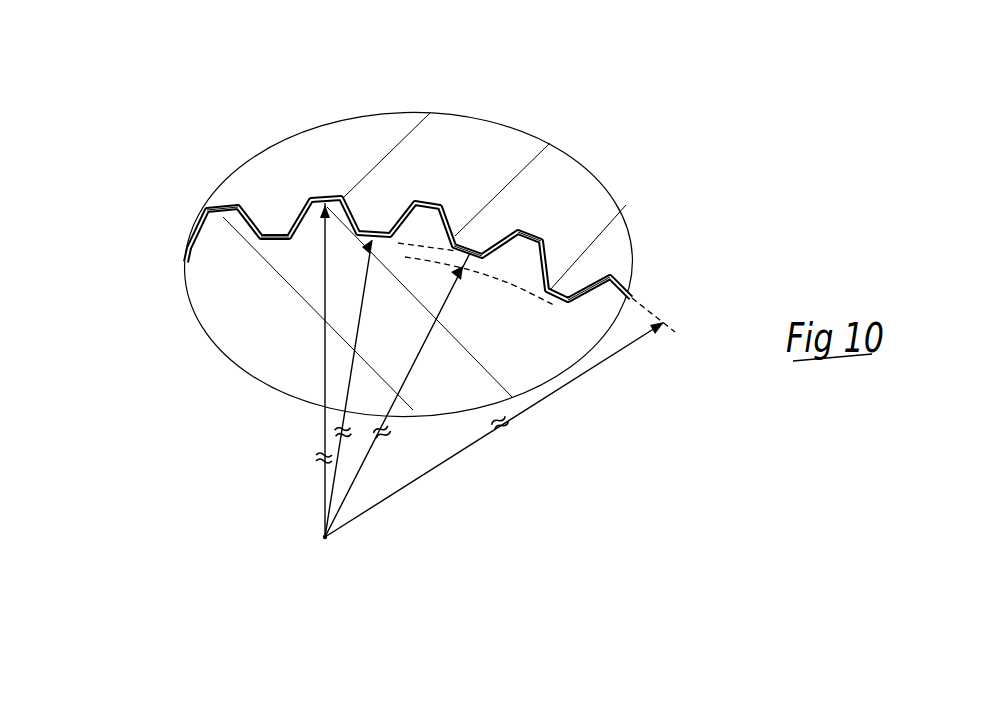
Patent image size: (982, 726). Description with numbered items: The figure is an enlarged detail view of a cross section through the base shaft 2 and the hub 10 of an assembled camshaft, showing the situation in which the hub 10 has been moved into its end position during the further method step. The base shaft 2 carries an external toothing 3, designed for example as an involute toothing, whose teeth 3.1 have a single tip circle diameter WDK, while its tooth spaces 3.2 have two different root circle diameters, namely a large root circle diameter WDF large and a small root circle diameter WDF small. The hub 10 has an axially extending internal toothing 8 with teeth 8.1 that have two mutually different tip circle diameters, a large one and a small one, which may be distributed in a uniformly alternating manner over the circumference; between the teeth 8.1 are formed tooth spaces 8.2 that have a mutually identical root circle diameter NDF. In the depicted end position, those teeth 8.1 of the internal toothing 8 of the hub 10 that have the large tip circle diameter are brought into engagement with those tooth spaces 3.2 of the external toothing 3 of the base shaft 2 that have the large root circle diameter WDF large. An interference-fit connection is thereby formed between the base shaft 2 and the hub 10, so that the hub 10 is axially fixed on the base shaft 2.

The base shaft 2 is at (263, 353).
The external toothing 3 is at (245, 243).
The teeth 3.1 is at (222, 218).
The tooth spaces 3.2 is at (275, 245).
The internal toothing 8 is at (597, 268).
The teeth 8.1 is at (472, 242).
The tooth spaces 8.2 is at (540, 231).
The hub 10 is at (587, 197).
The tip circle diameter WDK is at (323, 413).
The root circle diameter NDF is at (530, 407).
The root circle diameter WDF is at (337, 458).